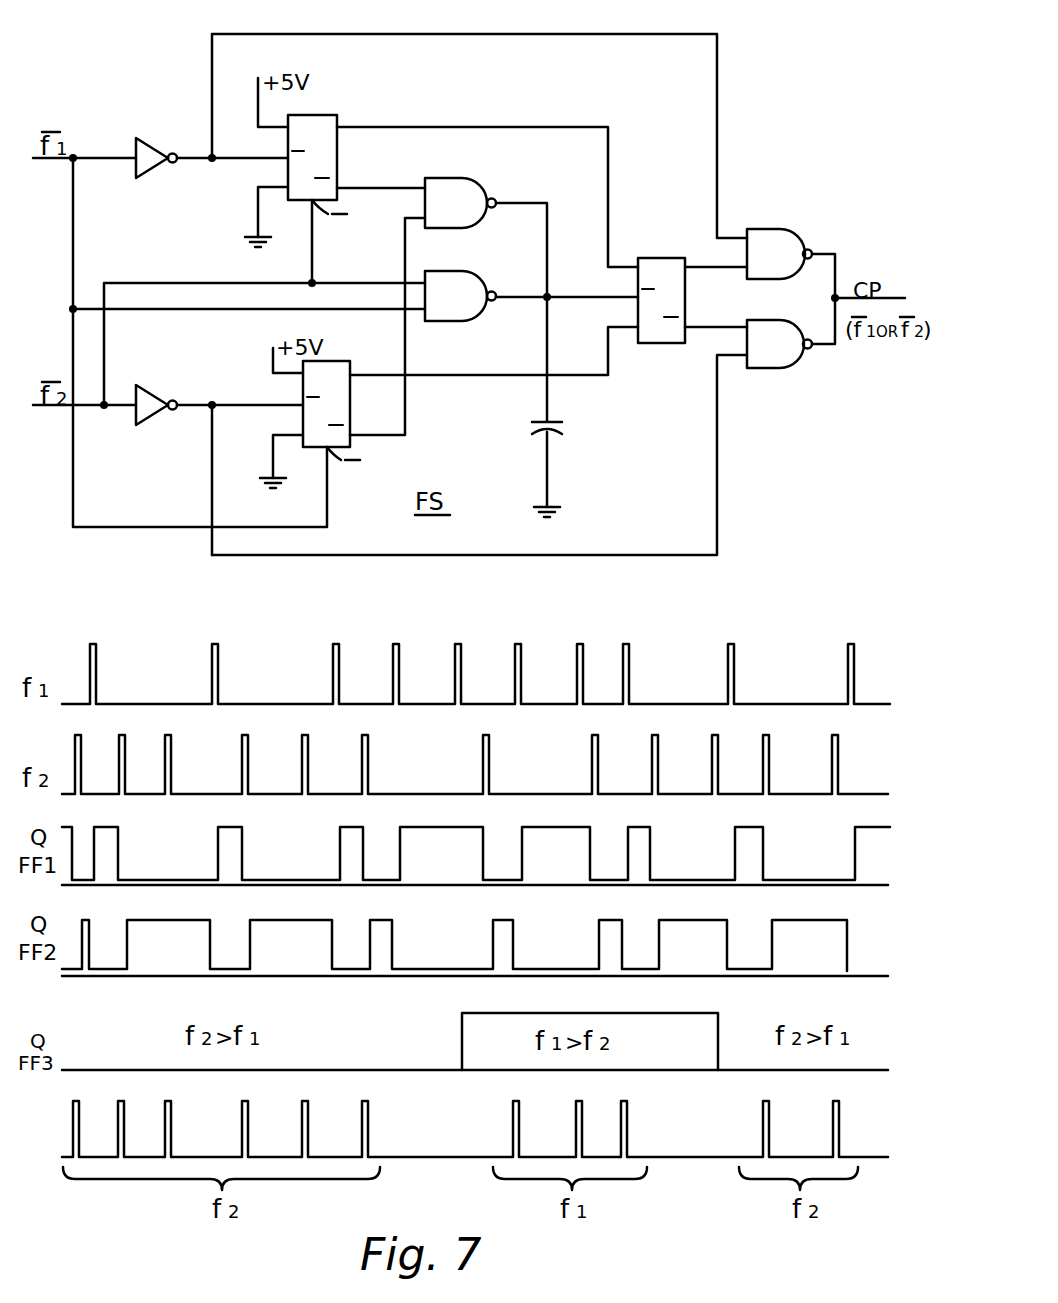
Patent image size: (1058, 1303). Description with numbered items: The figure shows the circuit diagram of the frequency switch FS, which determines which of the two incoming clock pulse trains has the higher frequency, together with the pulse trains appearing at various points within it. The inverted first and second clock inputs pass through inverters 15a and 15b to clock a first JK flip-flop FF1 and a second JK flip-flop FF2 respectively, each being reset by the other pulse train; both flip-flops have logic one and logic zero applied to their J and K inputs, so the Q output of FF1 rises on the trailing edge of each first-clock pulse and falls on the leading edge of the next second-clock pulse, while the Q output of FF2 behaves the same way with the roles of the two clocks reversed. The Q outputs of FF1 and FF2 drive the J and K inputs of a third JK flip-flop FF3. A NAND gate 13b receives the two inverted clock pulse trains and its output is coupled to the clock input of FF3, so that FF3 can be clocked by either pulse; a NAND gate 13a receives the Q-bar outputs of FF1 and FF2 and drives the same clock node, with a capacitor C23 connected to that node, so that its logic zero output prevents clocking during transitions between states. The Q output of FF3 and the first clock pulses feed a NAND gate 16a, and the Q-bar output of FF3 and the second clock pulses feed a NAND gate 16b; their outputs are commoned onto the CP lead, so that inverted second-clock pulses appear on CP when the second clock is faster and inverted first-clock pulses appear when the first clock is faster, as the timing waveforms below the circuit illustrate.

The inverter for f1 input 15a is at (147, 150).
The inverter for f2 input 15b is at (147, 397).
The NAND gate 13a is at (446, 185).
The NAND gate 13b is at (447, 278).
The NAND gate 16a is at (768, 237).
The NAND gate 16b is at (770, 328).
The capacitor C23 is at (573, 407).
The first JK flip-flop FF1 is at (334, 178).
The second JK flip-flop FF2 is at (348, 424).
The JK flip-flop FF3 is at (683, 299).